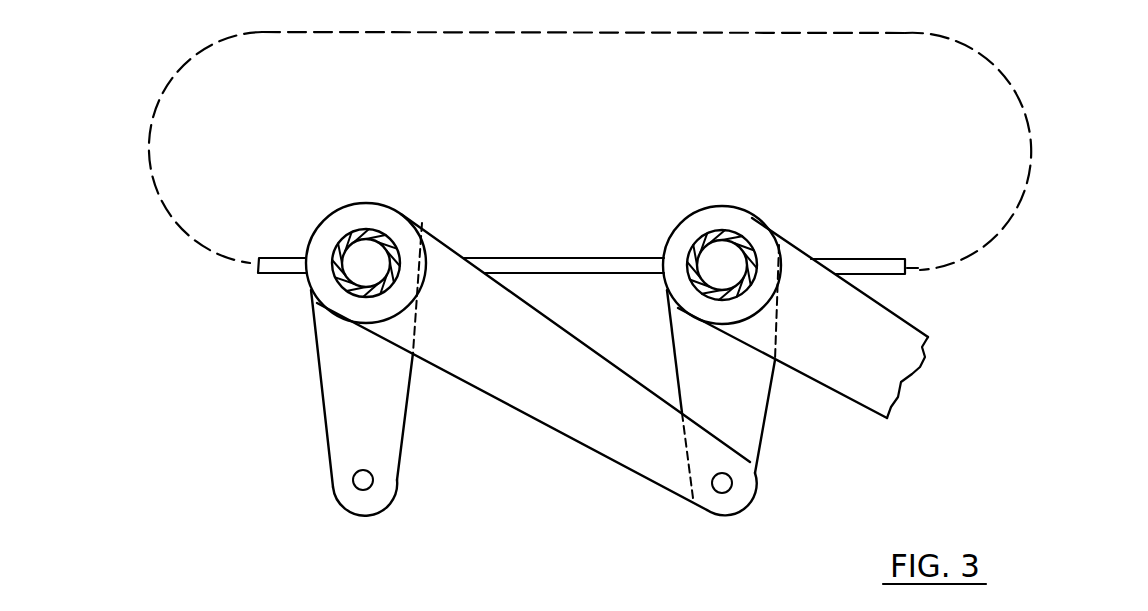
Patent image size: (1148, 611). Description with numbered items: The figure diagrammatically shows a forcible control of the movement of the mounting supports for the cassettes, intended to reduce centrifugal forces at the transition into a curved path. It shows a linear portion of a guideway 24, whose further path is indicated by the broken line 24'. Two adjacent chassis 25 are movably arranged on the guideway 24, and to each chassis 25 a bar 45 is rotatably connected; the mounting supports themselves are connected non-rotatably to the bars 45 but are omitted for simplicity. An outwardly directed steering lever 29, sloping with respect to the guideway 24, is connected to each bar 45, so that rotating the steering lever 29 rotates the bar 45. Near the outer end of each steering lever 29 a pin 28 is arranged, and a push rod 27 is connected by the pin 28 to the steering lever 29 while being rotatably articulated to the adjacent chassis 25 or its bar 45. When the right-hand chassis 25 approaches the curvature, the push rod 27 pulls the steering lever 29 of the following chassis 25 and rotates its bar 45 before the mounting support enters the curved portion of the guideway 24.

The broken line 24' is at (590, 151).
The guideway 24 is at (588, 244).
The chassis 25 is at (440, 185).
The push rod 27 is at (338, 422).
The pin 28 is at (717, 482).
The steering lever 29 is at (478, 360).
The bar 45 is at (350, 236).